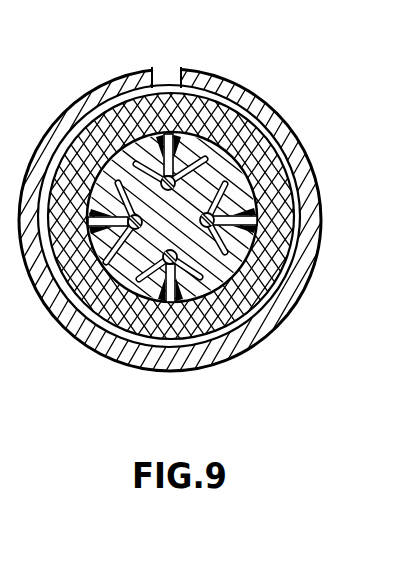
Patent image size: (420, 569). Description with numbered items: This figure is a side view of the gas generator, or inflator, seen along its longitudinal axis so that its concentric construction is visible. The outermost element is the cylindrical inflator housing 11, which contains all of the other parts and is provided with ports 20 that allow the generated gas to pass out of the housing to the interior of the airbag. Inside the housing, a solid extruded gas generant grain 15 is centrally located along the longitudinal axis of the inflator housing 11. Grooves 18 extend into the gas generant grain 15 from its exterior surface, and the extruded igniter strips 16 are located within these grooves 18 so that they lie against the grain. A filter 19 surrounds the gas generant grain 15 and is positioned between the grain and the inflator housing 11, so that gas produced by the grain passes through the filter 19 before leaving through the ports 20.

The inflator housing 11 is at (50, 133).
The gas generant grain 15 is at (128, 147).
The igniter strips 16 is at (233, 113).
The grooves 18 is at (185, 137).
The filter 19 is at (111, 318).
The ports 20 is at (161, 72).